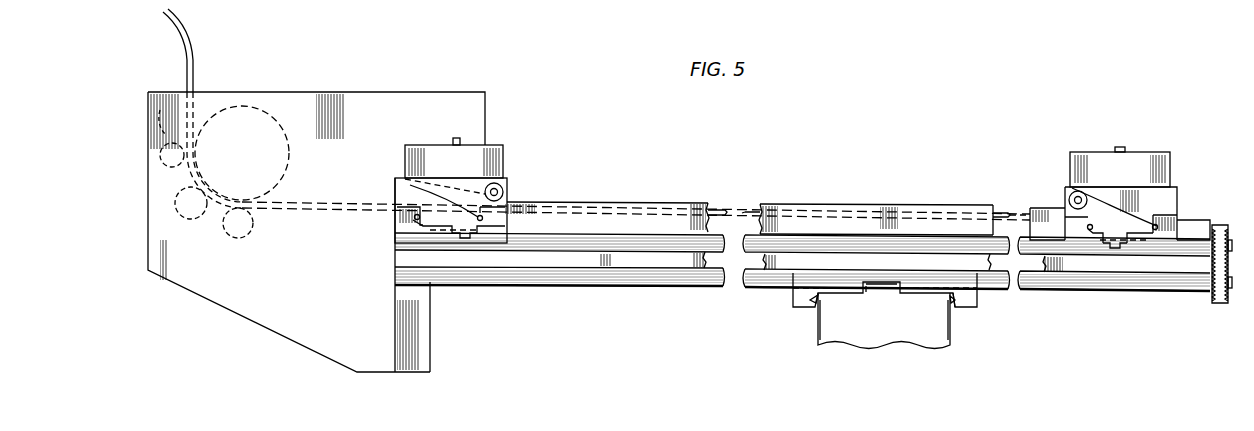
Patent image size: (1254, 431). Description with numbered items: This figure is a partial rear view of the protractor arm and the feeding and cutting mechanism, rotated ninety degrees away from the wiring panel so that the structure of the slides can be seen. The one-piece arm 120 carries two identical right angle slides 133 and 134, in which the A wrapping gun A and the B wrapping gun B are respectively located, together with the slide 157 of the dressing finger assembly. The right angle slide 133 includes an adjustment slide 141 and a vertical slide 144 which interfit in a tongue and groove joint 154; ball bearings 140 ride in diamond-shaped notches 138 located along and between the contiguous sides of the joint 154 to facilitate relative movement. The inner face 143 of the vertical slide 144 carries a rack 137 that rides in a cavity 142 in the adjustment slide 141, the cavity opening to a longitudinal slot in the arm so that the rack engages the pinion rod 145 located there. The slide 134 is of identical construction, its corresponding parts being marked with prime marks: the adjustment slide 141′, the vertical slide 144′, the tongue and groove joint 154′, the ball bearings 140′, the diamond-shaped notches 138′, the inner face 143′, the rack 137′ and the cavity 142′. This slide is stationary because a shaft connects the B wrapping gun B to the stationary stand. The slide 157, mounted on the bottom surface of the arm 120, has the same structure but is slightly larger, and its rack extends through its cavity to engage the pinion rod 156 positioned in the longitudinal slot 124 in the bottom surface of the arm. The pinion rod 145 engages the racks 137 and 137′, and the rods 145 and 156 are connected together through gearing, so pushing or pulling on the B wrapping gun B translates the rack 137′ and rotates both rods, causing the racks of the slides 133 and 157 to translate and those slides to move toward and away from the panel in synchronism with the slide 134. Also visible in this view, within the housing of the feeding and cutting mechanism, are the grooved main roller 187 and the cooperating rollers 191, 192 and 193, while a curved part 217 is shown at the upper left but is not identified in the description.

The cable 217 is at (192, 50).
The grooved main roller 187 is at (251, 108).
The cooperating roller 191 is at (153, 151).
The cooperating roller 192 is at (178, 212).
The cooperating roller 193 is at (228, 235).
The right angle slide 134 is at (466, 170).
The vertical slide 144′ is at (468, 183).
The B wrapping gun B is at (505, 192).
The diamond-shaped notches 138′ is at (416, 214).
The ball bearings 140′ is at (412, 219).
The inner face 143′ is at (427, 231).
The cavity 142′ is at (449, 232).
The rack 137′ is at (465, 236).
The adjustment slide 141′ is at (506, 230).
The tongue and groove joint 154′ is at (430, 229).
The arm 120 is at (932, 222).
The pinion rod 145 is at (999, 217).
The pinion rod 156 is at (718, 283).
The longitudinal slot 124 is at (692, 278).
The slide 157 is at (880, 330).
The right angle slide 133 is at (1136, 181).
The vertical slide 144 is at (1157, 195).
The A wrapping gun A is at (1070, 192).
The diamond-shaped notches 138 is at (1088, 226).
The ball bearings 140 is at (1158, 227).
The cavity 142 is at (1101, 245).
The rack 137 is at (1115, 248).
The inner face 143 is at (1140, 238).
The adjustment slide 141 is at (1173, 235).
The tongue and groove joint 154 is at (1133, 233).